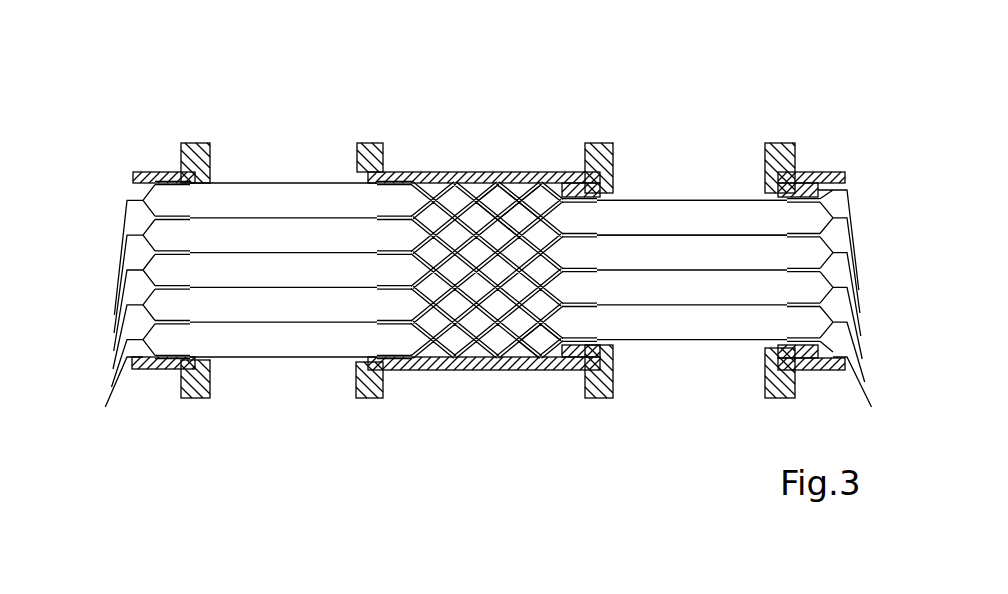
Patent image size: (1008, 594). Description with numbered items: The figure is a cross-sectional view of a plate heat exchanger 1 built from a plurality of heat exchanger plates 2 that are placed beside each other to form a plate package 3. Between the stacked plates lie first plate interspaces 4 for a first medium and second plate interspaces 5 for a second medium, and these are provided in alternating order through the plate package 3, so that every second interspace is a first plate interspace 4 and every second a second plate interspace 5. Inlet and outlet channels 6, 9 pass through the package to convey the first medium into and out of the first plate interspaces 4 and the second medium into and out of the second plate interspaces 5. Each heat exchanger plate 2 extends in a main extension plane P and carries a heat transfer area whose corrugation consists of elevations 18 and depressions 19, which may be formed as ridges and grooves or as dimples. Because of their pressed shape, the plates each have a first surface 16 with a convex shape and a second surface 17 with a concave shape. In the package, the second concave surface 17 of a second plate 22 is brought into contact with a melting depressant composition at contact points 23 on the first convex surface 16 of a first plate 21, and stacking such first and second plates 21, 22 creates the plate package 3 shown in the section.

The plate heat exchanger 1 is at (468, 296).
The heat exchanger plate 2 is at (282, 360).
The plate package 3 is at (495, 330).
The first plate interspace 4 is at (297, 205).
The second plate interspace 5 is at (642, 252).
The inlet and outlet channel 6 is at (226, 233).
The inlet and outlet channel 9 is at (705, 215).
The first surface 16 is at (168, 183).
The second surface 17 is at (173, 325).
The elevation 18 is at (452, 172).
The depression 19 is at (520, 195).
The first plate 21 is at (432, 365).
The second plate 22 is at (537, 332).
The contact point 23 is at (495, 213).
The main extension plane P is at (133, 177).